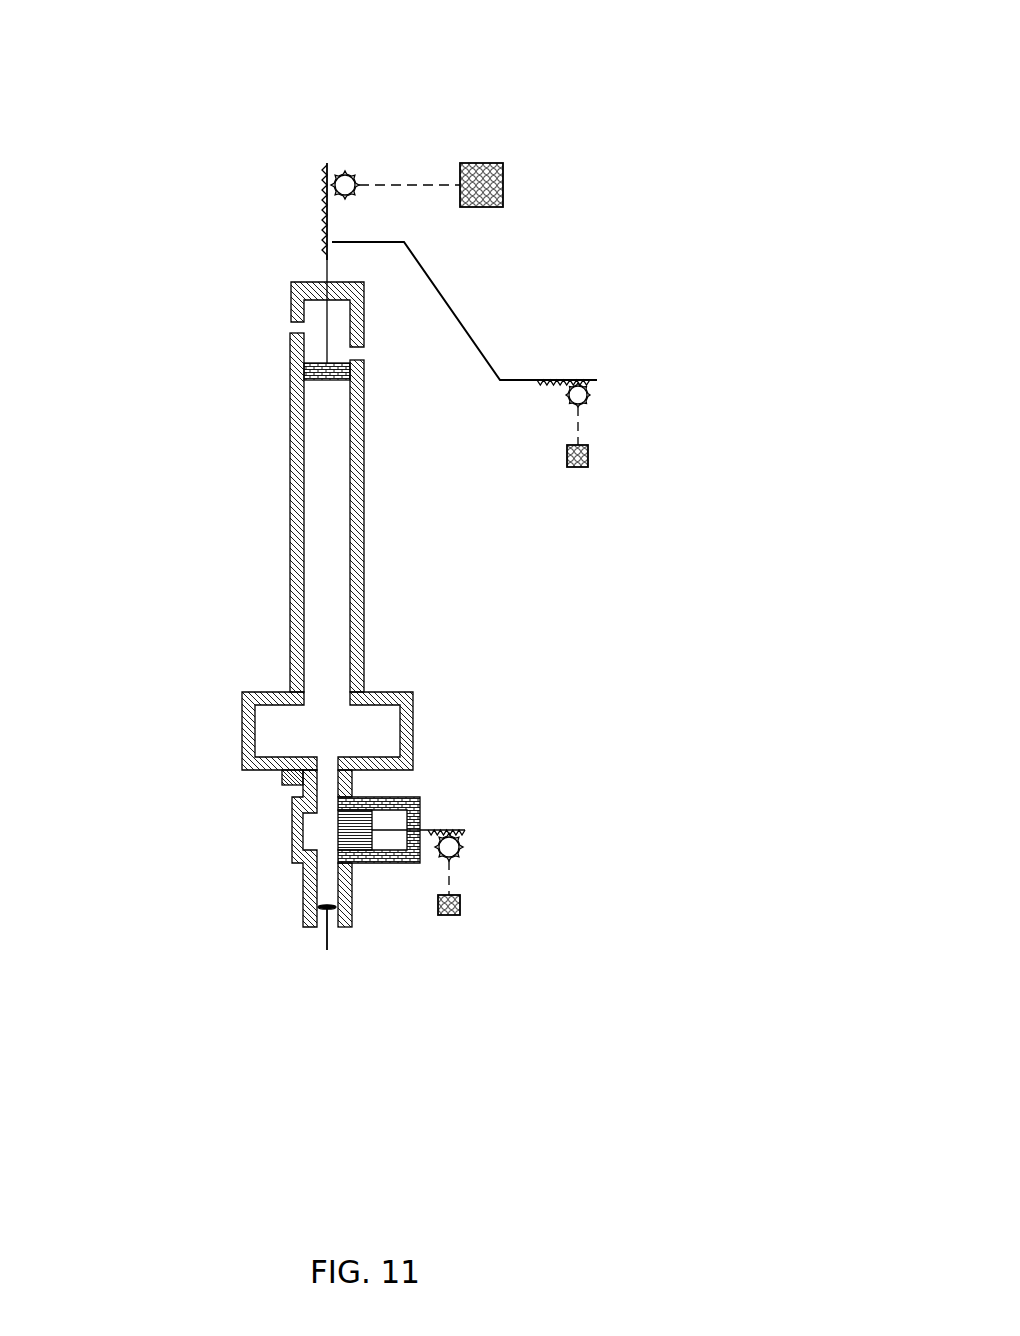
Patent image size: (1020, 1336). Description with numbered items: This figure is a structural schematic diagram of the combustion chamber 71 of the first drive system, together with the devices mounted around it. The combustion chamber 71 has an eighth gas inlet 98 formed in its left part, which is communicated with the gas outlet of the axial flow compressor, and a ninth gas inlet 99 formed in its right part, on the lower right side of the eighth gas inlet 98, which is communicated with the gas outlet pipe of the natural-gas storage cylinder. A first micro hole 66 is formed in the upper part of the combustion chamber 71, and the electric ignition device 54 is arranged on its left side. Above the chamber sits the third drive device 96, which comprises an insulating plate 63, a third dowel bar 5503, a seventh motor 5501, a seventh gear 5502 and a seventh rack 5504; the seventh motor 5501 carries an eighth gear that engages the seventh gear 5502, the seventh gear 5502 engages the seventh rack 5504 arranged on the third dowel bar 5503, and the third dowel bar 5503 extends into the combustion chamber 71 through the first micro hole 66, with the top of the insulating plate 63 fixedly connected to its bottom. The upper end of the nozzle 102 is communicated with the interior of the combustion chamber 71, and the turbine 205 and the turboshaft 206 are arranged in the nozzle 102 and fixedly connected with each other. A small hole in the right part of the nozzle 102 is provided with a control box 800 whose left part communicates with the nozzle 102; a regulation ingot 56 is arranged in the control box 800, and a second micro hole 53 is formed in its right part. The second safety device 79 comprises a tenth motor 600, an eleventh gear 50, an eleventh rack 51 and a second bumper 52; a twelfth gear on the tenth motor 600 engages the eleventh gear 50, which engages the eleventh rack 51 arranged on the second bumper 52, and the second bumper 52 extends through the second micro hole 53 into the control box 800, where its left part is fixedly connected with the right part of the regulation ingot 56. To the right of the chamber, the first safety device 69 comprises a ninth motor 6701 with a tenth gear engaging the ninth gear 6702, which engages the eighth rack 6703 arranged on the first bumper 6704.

The third drive device 96 is at (496, 76).
The seventh motor 5501 is at (460, 165).
The seventh gear 5502 is at (357, 170).
The third dowel bar 5503 is at (325, 245).
The seventh rack 5504 is at (324, 203).
The first micro hole 66 is at (327, 282).
The first safety device 69 is at (680, 300).
The first bumper 6704 is at (518, 380).
The eighth rack 6703 is at (650, 355).
The ninth gear 6702 is at (655, 429).
The ninth motor 6701 is at (578, 468).
The eighth gas inlet 98 is at (292, 330).
The ninth gas inlet 99 is at (362, 352).
The insulating plate 63 is at (323, 382).
The combustion chamber 71 is at (300, 732).
The electric ignition device 54 is at (282, 784).
The nozzle 102 is at (290, 837).
The regulation ingot 56 is at (337, 838).
The second safety device 79 is at (651, 823).
The control box 800 is at (371, 864).
The second micro hole 53 is at (372, 828).
The second bumper 52 is at (435, 828).
The eleventh rack 51 is at (465, 832).
The eleventh gear 50 is at (463, 835).
The tenth motor 600 is at (438, 917).
The turbine 205 is at (318, 915).
The turboshaft 206 is at (327, 950).